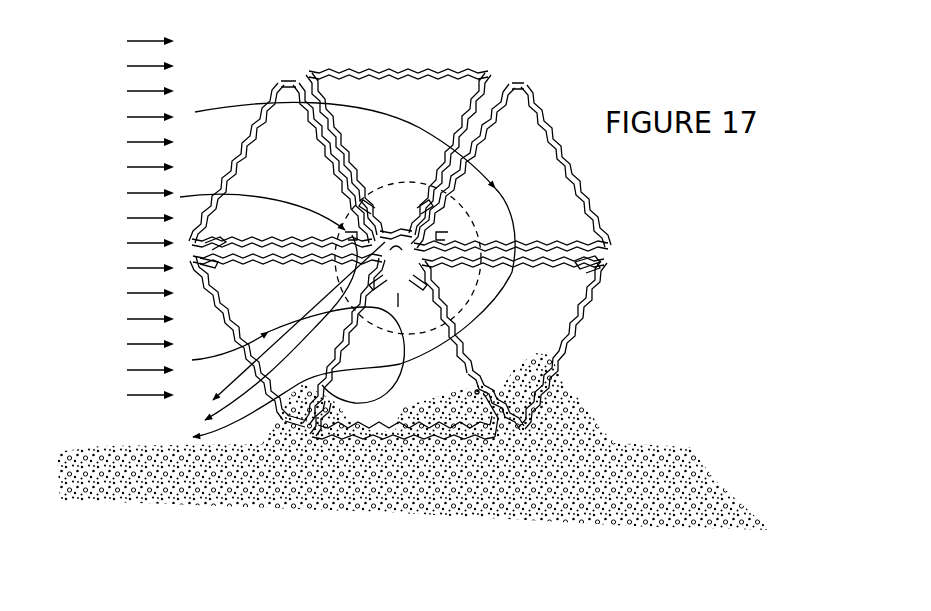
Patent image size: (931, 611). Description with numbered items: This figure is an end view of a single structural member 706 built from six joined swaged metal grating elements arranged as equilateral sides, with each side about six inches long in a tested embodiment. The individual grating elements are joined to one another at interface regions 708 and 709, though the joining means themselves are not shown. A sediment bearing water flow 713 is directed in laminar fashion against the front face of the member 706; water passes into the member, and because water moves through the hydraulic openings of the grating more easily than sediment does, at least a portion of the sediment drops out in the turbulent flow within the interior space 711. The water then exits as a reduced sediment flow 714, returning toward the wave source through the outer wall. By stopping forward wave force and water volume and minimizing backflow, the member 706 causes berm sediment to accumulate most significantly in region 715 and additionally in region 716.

The structural member 706 is at (605, 205).
The interface region 708 is at (613, 253).
The interface region 709 is at (343, 216).
The interior space 711 is at (566, 317).
The sediment bearing water flow 713 is at (113, 218).
The reduced sediment flow 714 is at (271, 338).
The region 715 is at (583, 397).
The region 716 is at (341, 425).